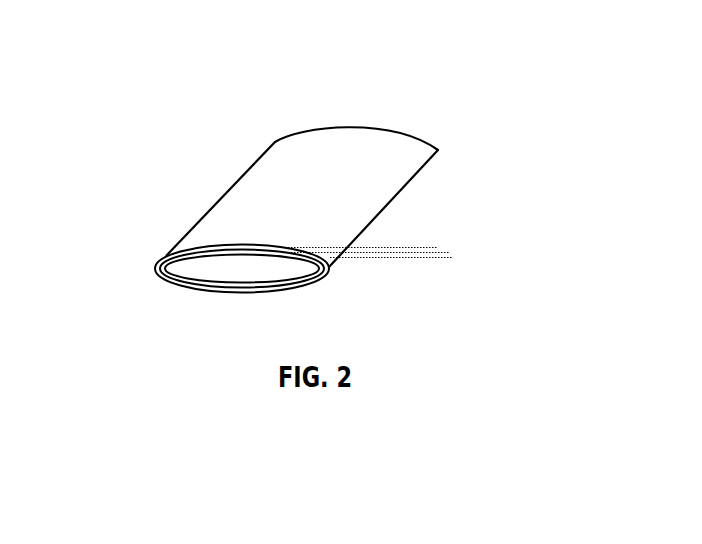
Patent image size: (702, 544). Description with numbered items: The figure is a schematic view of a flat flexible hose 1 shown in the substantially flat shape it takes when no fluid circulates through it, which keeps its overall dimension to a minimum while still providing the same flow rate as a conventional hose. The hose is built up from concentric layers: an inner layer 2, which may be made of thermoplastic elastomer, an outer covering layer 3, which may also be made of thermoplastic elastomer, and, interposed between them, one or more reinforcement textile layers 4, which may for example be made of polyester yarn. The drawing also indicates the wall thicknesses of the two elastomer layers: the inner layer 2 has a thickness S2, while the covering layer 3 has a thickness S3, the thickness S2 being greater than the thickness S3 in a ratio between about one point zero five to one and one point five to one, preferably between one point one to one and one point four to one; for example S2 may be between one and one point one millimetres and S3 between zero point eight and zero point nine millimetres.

The flat flexible hose 1 is at (194, 141).
The inner layer 2 is at (166, 282).
The outer covering layer 3 is at (385, 153).
The reinforcement textile layer 4 is at (156, 254).
The thickness of covering layer S3 is at (437, 246).
The thickness of inner layer S2 is at (450, 253).